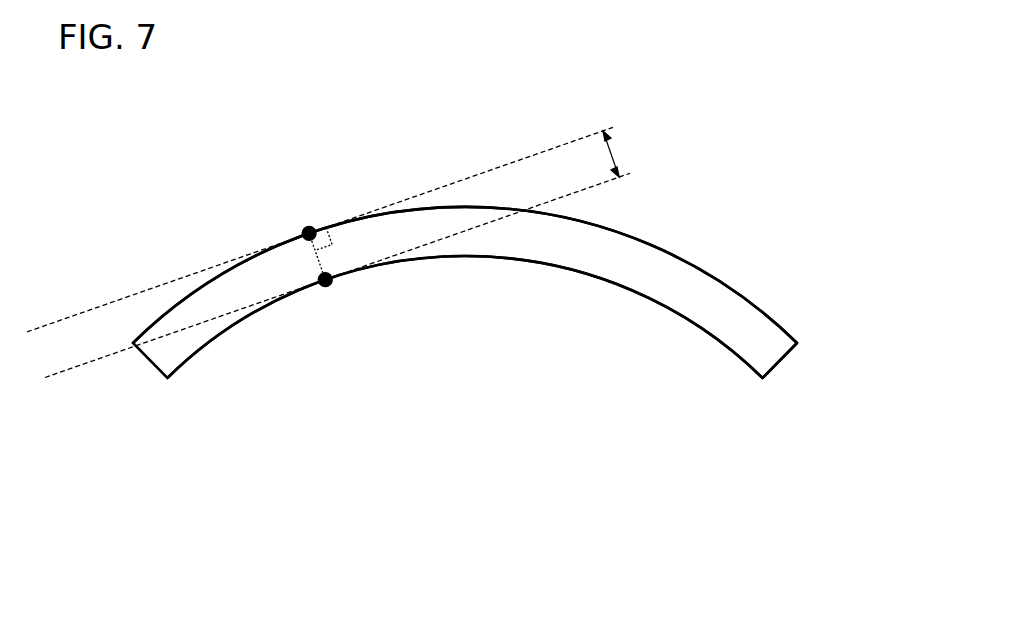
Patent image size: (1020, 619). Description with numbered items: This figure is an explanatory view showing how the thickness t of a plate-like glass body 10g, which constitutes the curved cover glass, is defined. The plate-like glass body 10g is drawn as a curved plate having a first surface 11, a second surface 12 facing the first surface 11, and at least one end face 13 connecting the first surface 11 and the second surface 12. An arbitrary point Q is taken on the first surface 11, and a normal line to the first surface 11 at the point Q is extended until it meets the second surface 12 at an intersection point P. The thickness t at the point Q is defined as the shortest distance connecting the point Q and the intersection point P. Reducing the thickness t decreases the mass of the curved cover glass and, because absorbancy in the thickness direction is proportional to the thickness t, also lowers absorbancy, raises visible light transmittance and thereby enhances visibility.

The plate-like glass body 10g is at (503, 264).
The first surface 11 is at (656, 302).
The second surface 12 is at (690, 258).
The end face 13 is at (783, 358).
The intersection point P is at (307, 228).
The arbitrary point Q is at (328, 284).
The thickness t is at (616, 153).